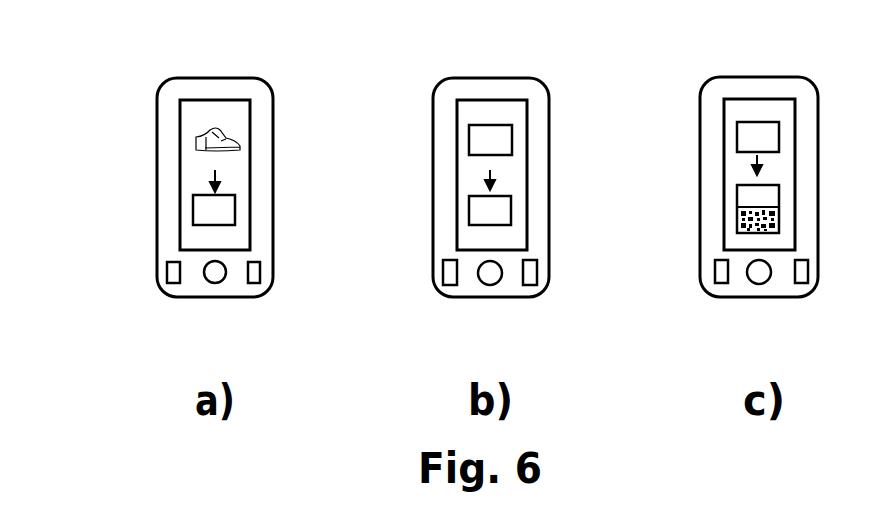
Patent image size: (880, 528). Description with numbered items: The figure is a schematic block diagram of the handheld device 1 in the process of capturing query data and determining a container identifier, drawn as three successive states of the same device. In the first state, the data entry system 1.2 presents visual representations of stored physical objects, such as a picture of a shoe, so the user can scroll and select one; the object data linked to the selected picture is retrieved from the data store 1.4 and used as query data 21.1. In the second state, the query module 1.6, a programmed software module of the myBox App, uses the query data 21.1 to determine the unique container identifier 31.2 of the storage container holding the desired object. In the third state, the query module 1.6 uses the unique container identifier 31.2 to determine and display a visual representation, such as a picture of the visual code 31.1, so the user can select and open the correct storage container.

The handheld device 1 is at (177, 87).
The data entry system 1.2 is at (250, 283).
The data store 1.4 is at (167, 277).
The query module 1.6 is at (523, 285).
The query data 21.1 is at (193, 203).
The unique container identifier 31.2 is at (469, 203).
The visual code 31.1 is at (737, 213).